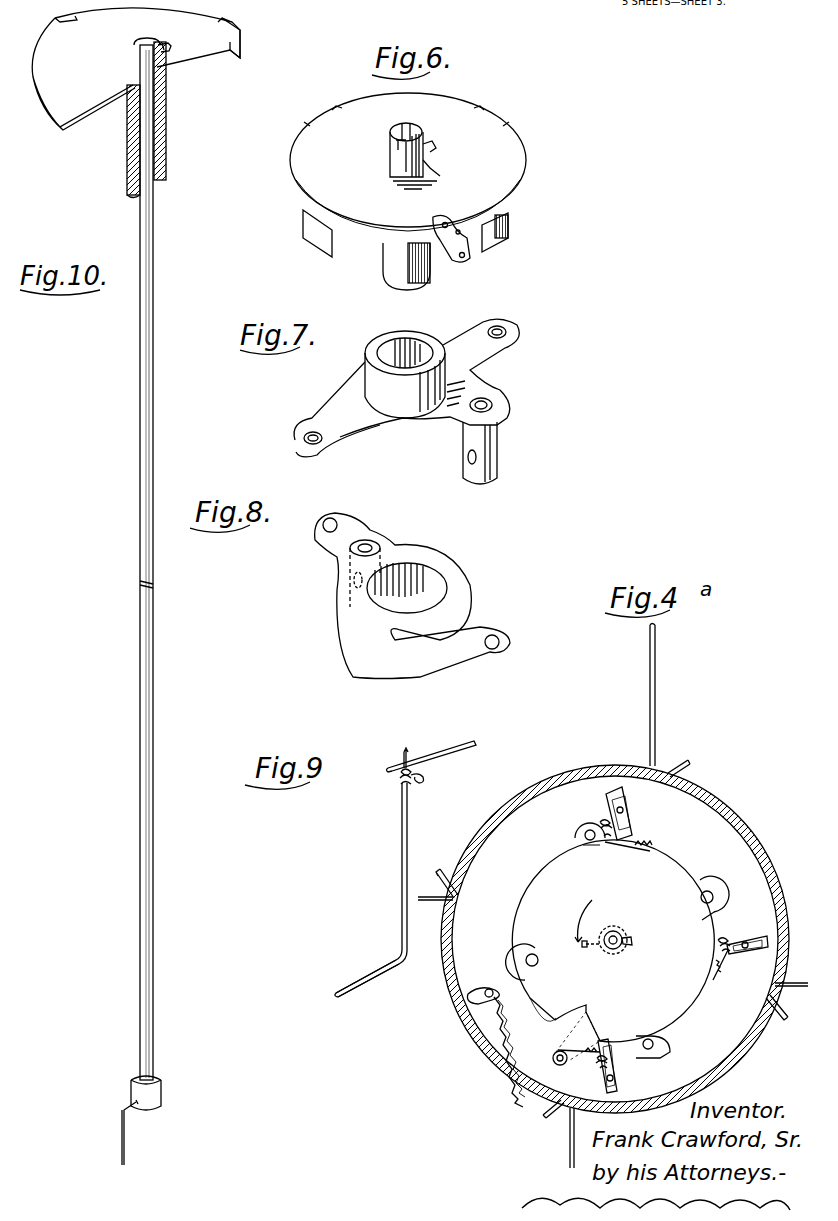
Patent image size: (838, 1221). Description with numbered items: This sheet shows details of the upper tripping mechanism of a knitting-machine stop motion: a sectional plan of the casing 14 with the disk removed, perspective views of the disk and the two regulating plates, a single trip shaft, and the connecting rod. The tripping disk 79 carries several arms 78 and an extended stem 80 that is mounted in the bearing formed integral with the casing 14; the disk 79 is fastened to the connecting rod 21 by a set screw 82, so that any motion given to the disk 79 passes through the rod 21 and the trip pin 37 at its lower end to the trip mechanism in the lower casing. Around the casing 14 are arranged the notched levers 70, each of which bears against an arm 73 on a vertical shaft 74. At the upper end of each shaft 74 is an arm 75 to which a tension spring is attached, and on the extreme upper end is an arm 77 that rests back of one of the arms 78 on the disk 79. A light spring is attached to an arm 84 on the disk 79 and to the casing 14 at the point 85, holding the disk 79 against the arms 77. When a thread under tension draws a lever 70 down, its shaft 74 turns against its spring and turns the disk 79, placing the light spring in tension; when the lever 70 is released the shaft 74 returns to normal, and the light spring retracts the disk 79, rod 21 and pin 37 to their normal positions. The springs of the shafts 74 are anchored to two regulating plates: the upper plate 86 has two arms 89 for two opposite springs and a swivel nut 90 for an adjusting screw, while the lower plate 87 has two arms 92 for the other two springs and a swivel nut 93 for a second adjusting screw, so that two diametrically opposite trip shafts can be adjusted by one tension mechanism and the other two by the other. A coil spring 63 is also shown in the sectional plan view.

In FIG. 4A, the casing 14 is at (505, 812).
In FIG. 10, the connecting rod 21 is at (140, 326).
In FIG. 10, the trip pin 37 is at (124, 1137).
In FIG. 4A, the trip pin 37 is at (587, 923).
In FIG. 4A, the spring 63 is at (520, 1035).
In FIG. 4A, the lever 70 is at (650, 668).
In FIG. 9, the arm 73 is at (372, 985).
In FIG. 4A, the arm 73 is at (444, 868).
In FIG. 9, the shaft 74 is at (402, 838).
In FIG. 4A, the shaft 74 is at (625, 812).
In FIG. 9, the arm 75 is at (422, 779).
In FIG. 4A, the arm 75 is at (603, 822).
In FIG. 9, the arm 77 is at (452, 742).
In FIG. 4A, the arm 77 is at (628, 842).
In FIG. 10, the arm 78 is at (240, 43).
In FIG. 6, the arm 78 is at (304, 124).
In FIG. 4A, the arm 78 is at (600, 846).
In FIG. 10, the disk 79 is at (136, 69).
In FIG. 6, the disk 79 is at (408, 162).
In FIG. 4A, the disk 79 is at (613, 941).
In FIG. 10, the stem 80 is at (166, 120).
In FIG. 6, the stem 80 is at (383, 263).
In FIG. 10, the set screw 82 is at (170, 45).
In FIG. 6, the set screw 82 is at (436, 144).
In FIG. 4A, the set screw 82 is at (632, 943).
In FIG. 6, the arm 84 is at (452, 258).
In FIG. 4A, the arm 84 is at (560, 1065).
In FIG. 4A, the casing attachment point 85 is at (475, 992).
In FIG. 7, the regulating plate 86 is at (403, 418).
In FIG. 8, the regulating plate 87 is at (458, 580).
In FIG. 7, the arm 89 is at (300, 430).
In FIG. 4A, the arm 89 is at (724, 896).
In FIG. 7, the swivel nut 90 is at (497, 438).
In FIG. 8, the arm 92 is at (323, 530).
In FIG. 4A, the arm 92 is at (578, 830).
In FIG. 8, the swivel nut 93 is at (350, 570).